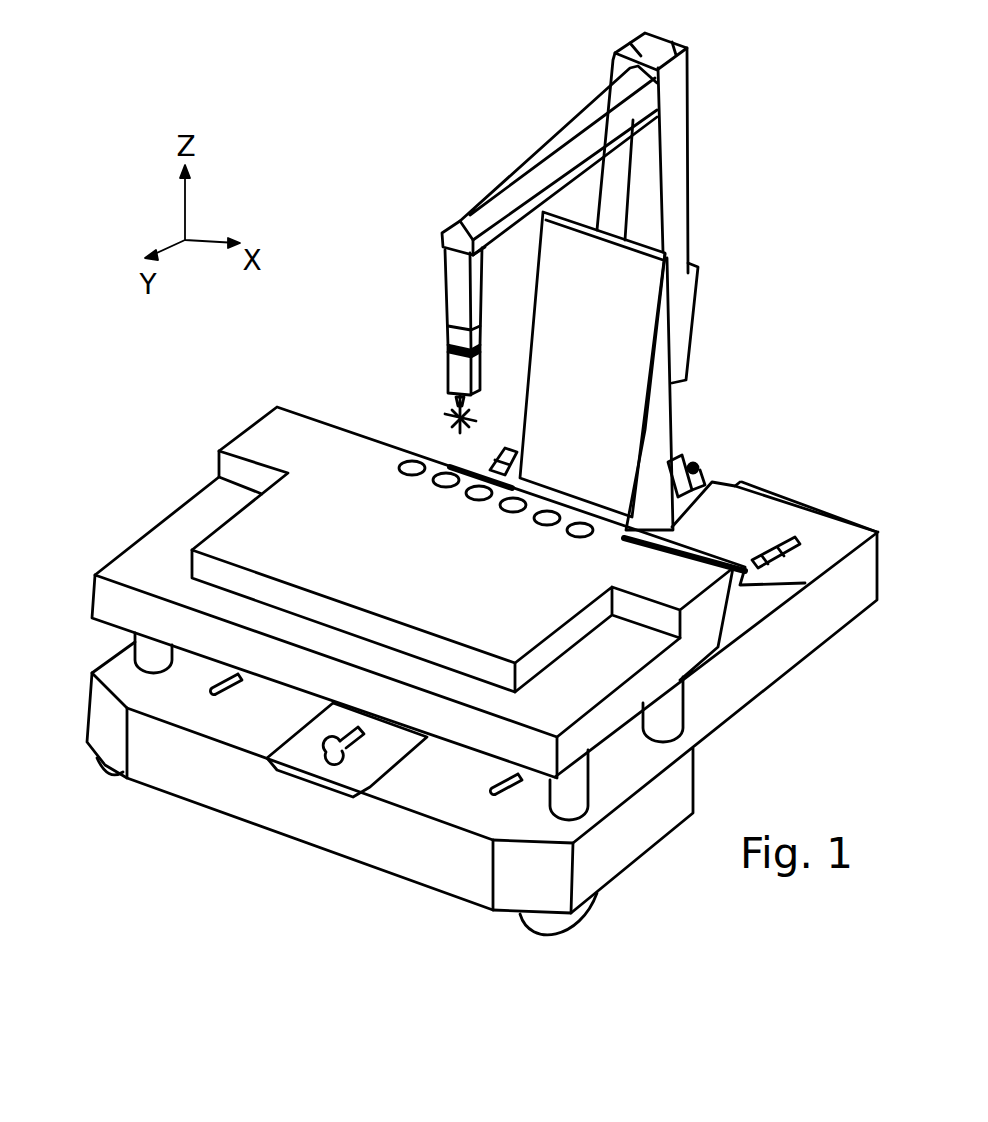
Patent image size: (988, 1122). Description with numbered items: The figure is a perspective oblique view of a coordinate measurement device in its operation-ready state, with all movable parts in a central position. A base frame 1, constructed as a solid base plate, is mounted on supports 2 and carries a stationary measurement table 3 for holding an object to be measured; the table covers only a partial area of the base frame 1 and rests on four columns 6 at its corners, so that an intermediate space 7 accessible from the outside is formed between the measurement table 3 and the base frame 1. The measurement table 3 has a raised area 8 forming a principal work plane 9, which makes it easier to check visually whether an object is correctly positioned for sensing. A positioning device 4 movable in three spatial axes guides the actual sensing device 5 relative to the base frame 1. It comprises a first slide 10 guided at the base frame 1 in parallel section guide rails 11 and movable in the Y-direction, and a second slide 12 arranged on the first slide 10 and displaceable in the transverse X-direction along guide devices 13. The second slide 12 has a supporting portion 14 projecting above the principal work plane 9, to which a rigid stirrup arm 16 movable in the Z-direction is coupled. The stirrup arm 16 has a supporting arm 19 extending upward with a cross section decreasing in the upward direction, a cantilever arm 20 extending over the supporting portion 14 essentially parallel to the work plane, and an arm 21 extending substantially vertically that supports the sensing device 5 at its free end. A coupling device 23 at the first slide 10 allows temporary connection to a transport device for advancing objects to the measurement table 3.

The base frame 1 is at (310, 822).
The supports 2 is at (105, 766).
The measurement table 3 is at (182, 528).
The positioning device 4 is at (706, 466).
The sensing device 5 is at (456, 363).
The columns 6 is at (147, 655).
The intermediate space 7 is at (113, 644).
The raised area 8 is at (246, 468).
The principal work plane 9 is at (426, 564).
The first slide 10 is at (742, 585).
The section guide rails 11 is at (216, 688).
The second slide 12 is at (658, 384).
The guide devices 13 is at (700, 548).
The supporting portion 14 is at (626, 278).
The stirrup arm 16 is at (709, 80).
The supporting arm 19 is at (680, 150).
The cantilever arm 20 is at (549, 165).
The arm 21 is at (462, 272).
The coupling device 23 is at (355, 750).